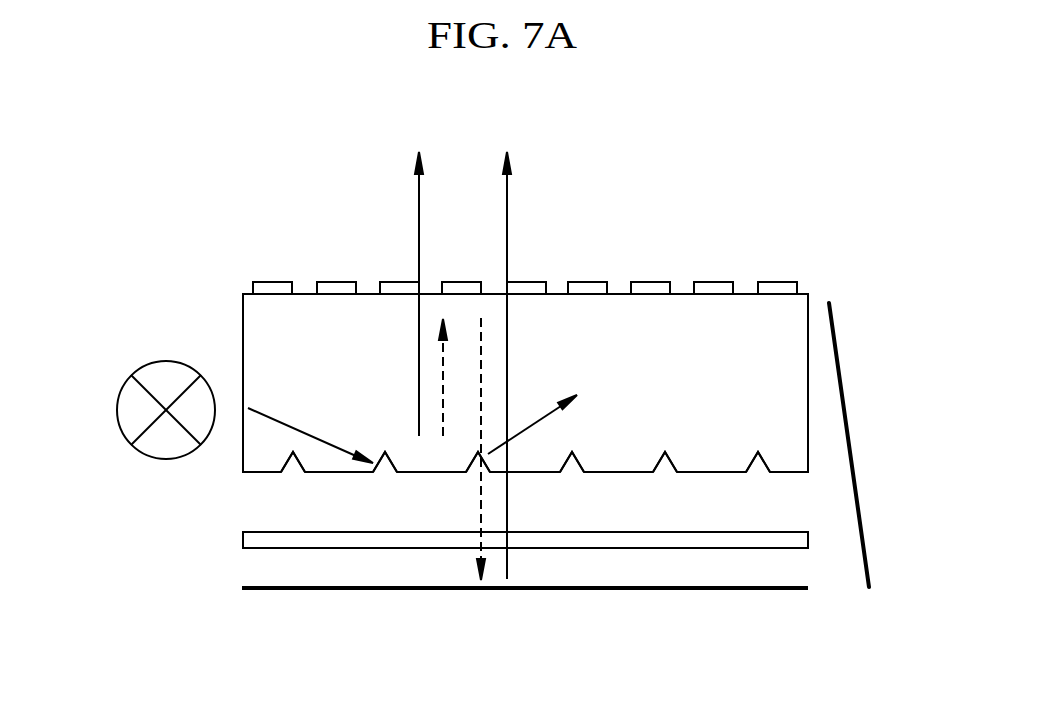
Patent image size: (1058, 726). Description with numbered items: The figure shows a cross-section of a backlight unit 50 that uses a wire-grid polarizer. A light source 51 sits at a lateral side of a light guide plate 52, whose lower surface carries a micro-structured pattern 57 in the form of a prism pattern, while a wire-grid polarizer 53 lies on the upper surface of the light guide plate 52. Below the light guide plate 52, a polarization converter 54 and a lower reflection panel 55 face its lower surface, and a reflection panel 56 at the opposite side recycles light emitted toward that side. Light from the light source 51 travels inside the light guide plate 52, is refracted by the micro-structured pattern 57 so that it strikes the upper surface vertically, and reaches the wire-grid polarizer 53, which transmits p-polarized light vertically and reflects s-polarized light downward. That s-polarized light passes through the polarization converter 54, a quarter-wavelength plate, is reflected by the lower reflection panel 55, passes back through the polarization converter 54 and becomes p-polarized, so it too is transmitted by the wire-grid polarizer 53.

The backlight unit 50 is at (538, 653).
The light source 51 is at (117, 410).
The light guide plate 52 is at (257, 330).
The wire-grid polarizer 53 is at (777, 281).
The polarization converter 54 is at (737, 536).
The lower reflection panel 55 is at (740, 592).
The reflection panel 56 is at (853, 448).
The micro-structured pattern 57 is at (286, 466).